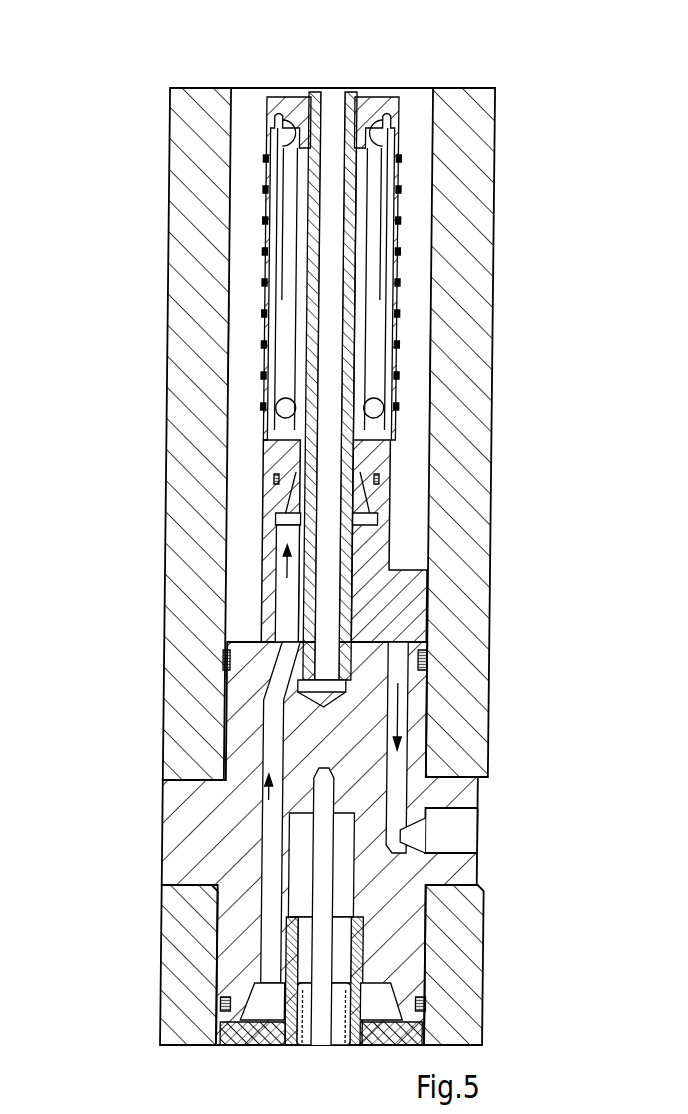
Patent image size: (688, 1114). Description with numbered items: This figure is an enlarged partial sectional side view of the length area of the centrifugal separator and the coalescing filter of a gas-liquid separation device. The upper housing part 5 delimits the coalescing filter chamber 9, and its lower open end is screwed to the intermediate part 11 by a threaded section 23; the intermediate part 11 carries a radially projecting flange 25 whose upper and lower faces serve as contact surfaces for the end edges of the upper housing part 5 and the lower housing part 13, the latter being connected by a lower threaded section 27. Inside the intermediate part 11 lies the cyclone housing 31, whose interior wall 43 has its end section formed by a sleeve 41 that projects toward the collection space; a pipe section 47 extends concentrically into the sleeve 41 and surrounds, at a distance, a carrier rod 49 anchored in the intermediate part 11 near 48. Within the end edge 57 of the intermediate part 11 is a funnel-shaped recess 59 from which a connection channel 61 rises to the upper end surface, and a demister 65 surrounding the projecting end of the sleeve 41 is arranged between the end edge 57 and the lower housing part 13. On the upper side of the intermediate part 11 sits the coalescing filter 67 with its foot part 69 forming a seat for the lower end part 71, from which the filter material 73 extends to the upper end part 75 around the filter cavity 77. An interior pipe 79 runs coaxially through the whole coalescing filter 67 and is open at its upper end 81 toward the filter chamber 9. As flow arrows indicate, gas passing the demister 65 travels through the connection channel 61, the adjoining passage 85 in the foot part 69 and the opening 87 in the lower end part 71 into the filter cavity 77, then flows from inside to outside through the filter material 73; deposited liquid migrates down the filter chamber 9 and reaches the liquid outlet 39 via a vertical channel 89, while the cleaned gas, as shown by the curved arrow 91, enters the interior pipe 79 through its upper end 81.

The upper housing part 5 is at (180, 486).
The coalescing filter chamber 9 is at (246, 340).
The intermediate part 11 is at (232, 712).
The lower housing part 13 is at (180, 1030).
The threaded section 23 is at (428, 760).
The flange 25 is at (192, 797).
The lower threaded section 27 is at (432, 905).
The cyclone housing 31 is at (284, 863).
The liquid outlet 39 is at (450, 853).
The sleeve 41 is at (255, 935).
The interior wall 43 is at (362, 950).
The pipe section 47 is at (333, 1045).
The anchoring location of carrier rod 48 is at (333, 795).
The carrier rod 49 is at (322, 830).
The end edge 57 is at (227, 1008).
The funnel-shaped recess 59 is at (420, 1003).
The connection channel 61 is at (259, 852).
The demister 65 is at (420, 1040).
The coalescing filter 67 is at (411, 370).
The foot part 69 is at (400, 570).
The lower end part 71 is at (276, 430).
The filter material 73 is at (387, 306).
The upper end part 75 is at (400, 101).
The filter cavity 77 is at (357, 213).
The interior pipe 79 is at (310, 206).
The upper end of interior pipe 81 is at (355, 88).
The passage 85 is at (280, 530).
The opening 87 is at (380, 480).
The vertical channel 89 is at (412, 704).
The curved arrow 91 is at (333, 78).